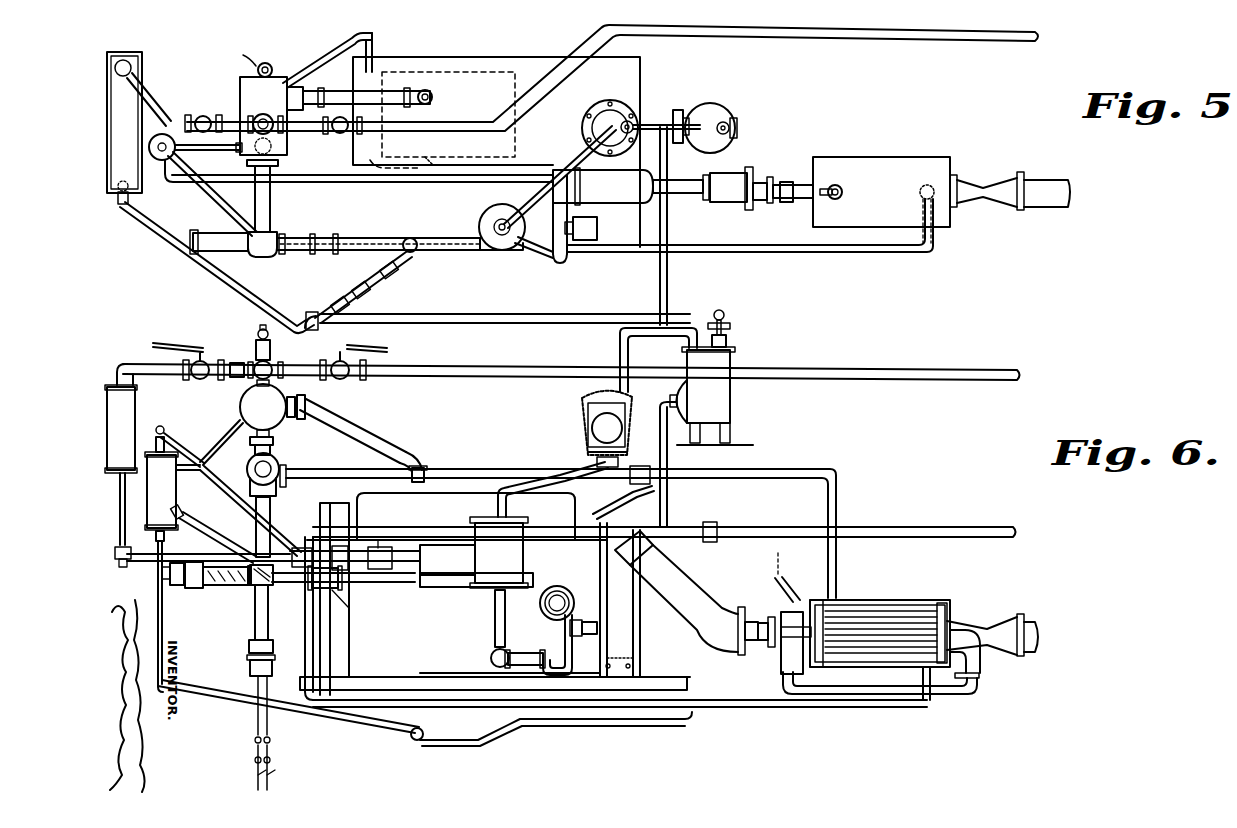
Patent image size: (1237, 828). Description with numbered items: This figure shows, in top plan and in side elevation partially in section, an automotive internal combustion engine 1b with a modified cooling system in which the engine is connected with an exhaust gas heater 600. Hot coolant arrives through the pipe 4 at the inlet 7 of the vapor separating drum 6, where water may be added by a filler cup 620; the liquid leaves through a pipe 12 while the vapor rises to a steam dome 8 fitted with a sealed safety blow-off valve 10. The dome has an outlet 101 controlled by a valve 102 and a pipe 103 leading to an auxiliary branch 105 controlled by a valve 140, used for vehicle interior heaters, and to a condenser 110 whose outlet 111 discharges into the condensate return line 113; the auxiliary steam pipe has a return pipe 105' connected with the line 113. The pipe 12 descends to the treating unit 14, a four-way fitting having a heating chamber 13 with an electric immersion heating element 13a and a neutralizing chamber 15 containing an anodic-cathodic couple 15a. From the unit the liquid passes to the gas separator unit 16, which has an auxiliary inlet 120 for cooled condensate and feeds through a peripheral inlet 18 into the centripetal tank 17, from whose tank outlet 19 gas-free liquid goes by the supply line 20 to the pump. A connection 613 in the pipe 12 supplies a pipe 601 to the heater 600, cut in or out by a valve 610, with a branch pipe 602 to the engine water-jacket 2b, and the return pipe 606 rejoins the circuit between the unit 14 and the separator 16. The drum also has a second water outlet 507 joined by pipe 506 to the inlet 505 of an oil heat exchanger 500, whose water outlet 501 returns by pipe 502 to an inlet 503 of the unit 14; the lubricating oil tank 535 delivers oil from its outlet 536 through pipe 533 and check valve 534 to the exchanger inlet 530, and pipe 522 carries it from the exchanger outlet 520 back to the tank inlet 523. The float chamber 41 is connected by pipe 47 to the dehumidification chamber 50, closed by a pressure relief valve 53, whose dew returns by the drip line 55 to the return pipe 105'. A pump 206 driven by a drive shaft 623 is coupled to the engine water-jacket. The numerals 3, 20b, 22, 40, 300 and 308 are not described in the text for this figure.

In FIG. 5, the engine 1b is at (512, 57).
In FIG. 6, the engine 1b is at (495, 599).
In FIG. 6, the engine water-jacket 2b is at (398, 493).
In FIG. 5, the valve 3 is at (433, 97).
In FIG. 6, the valve 3 is at (323, 420).
In FIG. 5, the pipe 4 is at (342, 90).
In FIG. 6, the pipe 4 is at (360, 425).
In FIG. 5, the vapor separating drum 6 is at (240, 85).
In FIG. 6, the vapor separating drum 6 is at (242, 398).
In FIG. 5, the inlet 7 is at (297, 87).
In FIG. 6, the inlet 7 is at (292, 397).
In FIG. 5, the steam dome 8 is at (280, 142).
In FIG. 6, the steam dome 8 is at (273, 364).
In FIG. 5, the safety blow-off valve 10 is at (261, 62).
In FIG. 6, the safety blow-off valve 10 is at (258, 325).
In FIG. 5, the pipe 12 is at (280, 165).
In FIG. 6, the pipe 12 is at (282, 460).
In FIG. 6, the heating chamber 13 is at (269, 610).
In FIG. 6, the electric immersion heating element 13a is at (273, 634).
In FIG. 5, the treating unit 14 is at (280, 240).
In FIG. 6, the treating unit 14 is at (253, 620).
In FIG. 5, the neutralizing chamber 15 is at (233, 252).
In FIG. 6, the neutralizing chamber 15 is at (246, 586).
In FIG. 6, the anodic-cathodic couple 15a is at (225, 622).
In FIG. 5, the gas separator unit 16 is at (420, 238).
In FIG. 6, the gas separator unit 16 is at (420, 583).
In FIG. 5, the centripetal tank 17 is at (478, 218).
In FIG. 6, the centripetal tank 17 is at (480, 520).
In FIG. 5, the peripheral inlet 18 is at (478, 250).
In FIG. 6, the tank outlet 19 is at (492, 600).
In FIG. 5, the supply line 20 is at (535, 253).
In FIG. 6, the supply line 20 is at (523, 650).
In FIG. 6, the elbow pipe 20b is at (572, 660).
In FIG. 5, the cylinder 22 is at (548, 178).
In FIG. 5, the link 40 is at (585, 134).
In FIG. 6, the link 40 is at (510, 497).
In FIG. 5, the float chamber 41 is at (610, 98).
In FIG. 6, the float chamber 41 is at (580, 420).
In FIG. 5, the pipe 47 is at (660, 125).
In FIG. 6, the pipe 47 is at (656, 338).
In FIG. 5, the dehumidification chamber 50 is at (724, 110).
In FIG. 6, the dehumidification chamber 50 is at (732, 405).
In FIG. 5, the pressure relief valve 53 is at (678, 108).
In FIG. 6, the pressure relief valve 53 is at (735, 332).
In FIG. 5, the drip line 55 is at (668, 218).
In FIG. 6, the drip line 55 is at (670, 468).
In FIG. 6, the outlet 101 is at (238, 362).
In FIG. 5, the valve 102 is at (205, 114).
In FIG. 6, the valve 102 is at (205, 350).
In FIG. 5, the pipe 103 is at (152, 100).
In FIG. 6, the pipe 103 is at (180, 385).
In FIG. 5, the auxiliary branch 105 is at (612, 78).
In FIG. 6, the auxiliary branch 105 is at (568, 364).
In FIG. 5, the return pipe 105' is at (497, 310).
In FIG. 6, the return pipe 105' is at (660, 601).
In FIG. 5, the condenser 110 is at (136, 50).
In FIG. 6, the condenser 110 is at (138, 410).
In FIG. 6, the condenser outlet 111 is at (118, 480).
In FIG. 5, the condensate return line 113 is at (226, 280).
In FIG. 6, the condensate return line 113 is at (126, 568).
In FIG. 5, the auxiliary inlet 120 is at (413, 253).
In FIG. 6, the auxiliary inlet 120 is at (418, 558).
In FIG. 5, the valve 140 is at (338, 134).
In FIG. 6, the valve 140 is at (340, 355).
In FIG. 5, the pump 206 is at (560, 258).
In FIG. 6, the strainer 300 is at (222, 590).
In FIG. 6, the valve 308 is at (184, 586).
In FIG. 5, the oil heat exchanger 500 is at (160, 162).
In FIG. 6, the oil heat exchanger 500 is at (226, 488).
In FIG. 5, the water outlet 501 is at (198, 192).
In FIG. 6, the water outlet 501 is at (240, 505).
In FIG. 5, the pipe 502 is at (222, 190).
In FIG. 6, the pipe 502 is at (246, 522).
In FIG. 6, the inlet 503 is at (272, 590).
In FIG. 6, the inlet 505 is at (180, 470).
In FIG. 5, the pipe 506 is at (212, 155).
In FIG. 6, the pipe 506 is at (260, 414).
In FIG. 6, the second water outlet 507 is at (276, 437).
In FIG. 6, the exchanger outlet 520 is at (170, 540).
In FIG. 5, the pipe 522 is at (343, 183).
In FIG. 6, the pipe 522 is at (230, 701).
In FIG. 5, the inlet 523 is at (440, 170).
In FIG. 6, the inlet 523 is at (425, 734).
In FIG. 6, the inlet 530 is at (162, 432).
In FIG. 5, the pipe 533 is at (315, 62).
In FIG. 6, the pipe 533 is at (222, 458).
In FIG. 5, the check valve 534 is at (378, 30).
In FIG. 5, the lubricating oil tank 535 is at (462, 58).
In FIG. 6, the lubricating oil tank 535 is at (490, 745).
In FIG. 5, the outlet 536 is at (452, 72).
In FIG. 5, the exhaust gas heater 600 is at (890, 152).
In FIG. 6, the exhaust gas heater 600 is at (903, 598).
In FIG. 5, the pipe 601 is at (842, 190).
In FIG. 6, the pipe 601 is at (516, 470).
In FIG. 6, the branch pipe 602 is at (612, 505).
In FIG. 5, the return pipe 606 is at (822, 255).
In FIG. 6, the return pipe 606 is at (808, 713).
In FIG. 5, the valve 610 is at (785, 180).
In FIG. 6, the valve 610 is at (795, 588).
In FIG. 5, the connection 613 is at (272, 180).
In FIG. 6, the connection 613 is at (272, 497).
In FIG. 5, the filler cup 620 is at (250, 60).
In FIG. 5, the drive shaft 623 is at (578, 215).
In FIG. 6, the drive shaft 623 is at (578, 602).